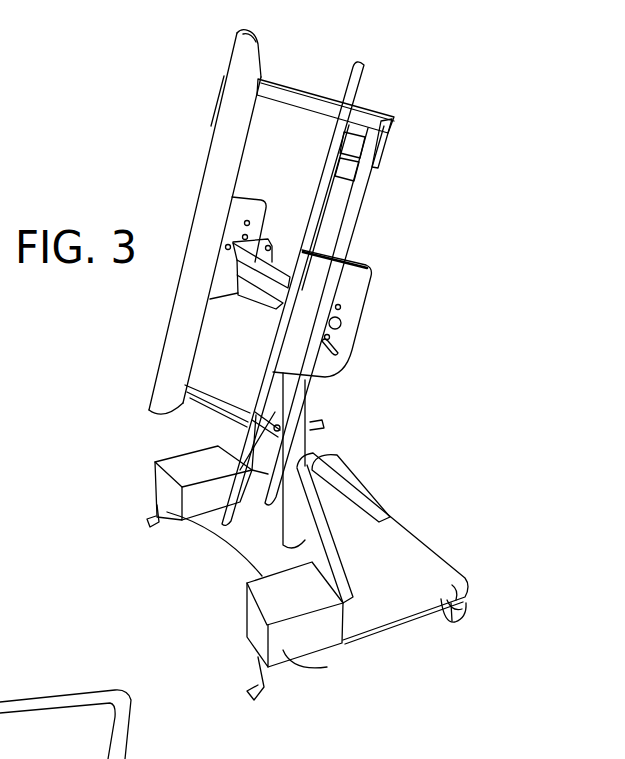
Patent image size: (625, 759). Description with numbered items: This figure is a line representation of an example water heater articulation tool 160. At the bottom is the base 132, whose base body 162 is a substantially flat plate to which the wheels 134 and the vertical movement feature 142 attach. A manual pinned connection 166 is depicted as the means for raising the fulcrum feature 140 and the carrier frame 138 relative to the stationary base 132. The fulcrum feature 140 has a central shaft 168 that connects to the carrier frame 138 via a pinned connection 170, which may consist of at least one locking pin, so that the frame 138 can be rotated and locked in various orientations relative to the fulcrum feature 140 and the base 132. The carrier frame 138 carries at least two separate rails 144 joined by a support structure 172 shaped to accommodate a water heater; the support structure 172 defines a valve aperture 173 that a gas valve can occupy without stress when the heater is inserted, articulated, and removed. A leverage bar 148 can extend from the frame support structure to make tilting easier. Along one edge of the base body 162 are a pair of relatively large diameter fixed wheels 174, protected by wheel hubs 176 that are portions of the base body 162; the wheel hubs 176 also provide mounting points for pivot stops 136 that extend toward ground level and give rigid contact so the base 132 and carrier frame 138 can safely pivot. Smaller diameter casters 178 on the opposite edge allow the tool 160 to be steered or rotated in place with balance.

The base 132 is at (430, 502).
The wheels 134 is at (450, 636).
The pivot stops 136 is at (147, 503).
The carrier frame 138 is at (192, 171).
The fulcrum feature 140 is at (374, 293).
The vertical movement feature 142 is at (338, 407).
The rails 144 is at (250, 45).
The leverage bar 148 is at (34, 697).
The articulation tool 160 is at (428, 70).
The base body 162 is at (445, 560).
The pinned connection 166 is at (323, 427).
The central shaft 168 is at (285, 270).
The pinned connection 170 is at (348, 354).
The support structure 172 is at (286, 101).
The valve aperture 173 is at (192, 428).
The fixed wheels 174 is at (187, 527).
The wheel hubs 176 is at (212, 478).
The casters 178 is at (466, 606).